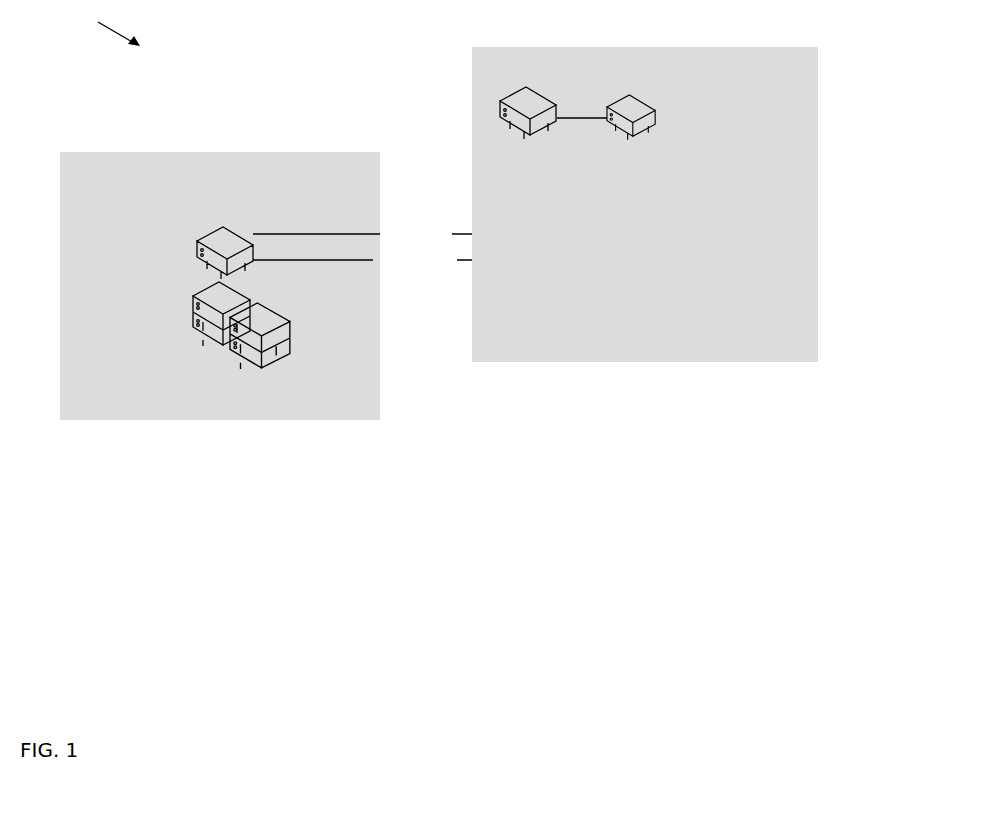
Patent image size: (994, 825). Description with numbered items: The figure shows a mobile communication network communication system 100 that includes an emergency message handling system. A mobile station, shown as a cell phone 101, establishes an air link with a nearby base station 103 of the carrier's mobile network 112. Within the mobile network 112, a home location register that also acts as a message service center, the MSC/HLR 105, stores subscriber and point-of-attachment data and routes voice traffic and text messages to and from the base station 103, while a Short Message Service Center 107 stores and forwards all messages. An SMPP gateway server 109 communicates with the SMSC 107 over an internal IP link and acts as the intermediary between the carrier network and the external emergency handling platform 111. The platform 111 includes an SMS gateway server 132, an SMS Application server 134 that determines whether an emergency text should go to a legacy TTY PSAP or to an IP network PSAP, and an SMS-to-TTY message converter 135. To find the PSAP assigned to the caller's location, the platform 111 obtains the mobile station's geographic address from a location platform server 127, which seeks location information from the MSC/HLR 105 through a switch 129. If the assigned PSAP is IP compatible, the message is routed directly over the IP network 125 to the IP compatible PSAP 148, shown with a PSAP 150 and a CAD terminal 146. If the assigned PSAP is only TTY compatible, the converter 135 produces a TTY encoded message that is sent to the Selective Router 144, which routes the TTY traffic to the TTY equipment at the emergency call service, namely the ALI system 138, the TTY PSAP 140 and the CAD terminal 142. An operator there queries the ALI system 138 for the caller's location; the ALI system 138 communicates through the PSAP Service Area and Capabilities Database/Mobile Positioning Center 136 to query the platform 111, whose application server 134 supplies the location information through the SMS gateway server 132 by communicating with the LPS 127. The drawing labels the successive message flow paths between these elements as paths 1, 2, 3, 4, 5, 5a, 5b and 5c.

The mobile communication network communication system 100 is at (100, 27).
The cell phone 101 is at (794, 158).
The base station 103 is at (722, 95).
The home location register / message service center (MSC/HLR) 105 is at (722, 262).
The Short Message Service Center (SMSC) 107 is at (455, 371).
The SMPP gateway server 109 is at (541, 87).
The emergency handling platform 111 is at (140, 152).
The mobile network 112 is at (560, 46).
The IP network 125 is at (604, 497).
The location platform server (LPS) 127 is at (585, 315).
The switch 129 is at (700, 348).
The SMS gateway server 132 is at (215, 228).
The SMS 911 Application server 134 is at (192, 310).
The SMS-to-TTY message converter 135 is at (290, 307).
The PSAP Service Area & Capabilities Database/Mobile Positioning Center 136 is at (155, 562).
The automatic location identification (ALI) system 138 is at (383, 615).
The TTY PSAP 140 is at (475, 553).
The CAD terminal 142 is at (541, 584).
The 911 Selective Router 144 is at (336, 453).
The CAD terminal 146 is at (781, 532).
The IP compatible PSAP 148 is at (735, 608).
The PSAP 150 is at (635, 607).
The SMS message from subscriber 1 is at (747, 180).
The SMS/SMPP message path 2 is at (377, 191).
The location query path 3 is at (401, 271).
The PSAP database query path 4 is at (276, 464).
The IP network path 5 is at (387, 388).
The TTY path 5a is at (289, 404).
The selective router to PSAP path 5b is at (414, 490).
The ALI to PSAP path 5c is at (351, 578).